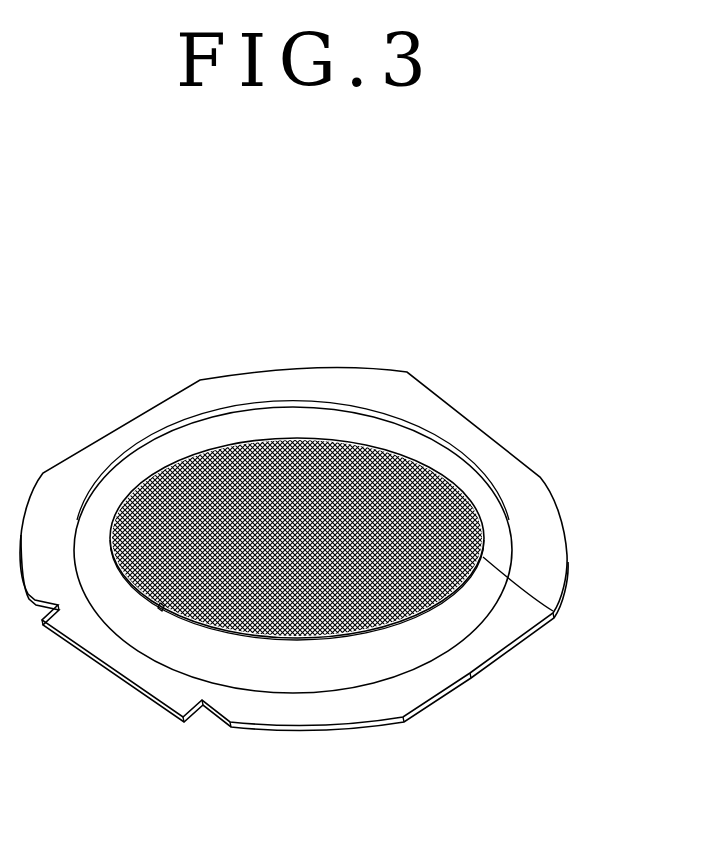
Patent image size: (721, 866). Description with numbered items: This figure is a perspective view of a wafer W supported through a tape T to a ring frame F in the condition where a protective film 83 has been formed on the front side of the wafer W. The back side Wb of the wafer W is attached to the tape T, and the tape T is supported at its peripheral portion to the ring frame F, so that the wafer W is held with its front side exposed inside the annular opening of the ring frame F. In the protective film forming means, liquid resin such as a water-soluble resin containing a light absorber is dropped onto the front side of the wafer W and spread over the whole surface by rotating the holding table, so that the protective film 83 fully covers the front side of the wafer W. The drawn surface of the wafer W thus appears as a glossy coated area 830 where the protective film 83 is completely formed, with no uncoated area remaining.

The protective film 83 is at (300, 437).
The glossy coated area 830 is at (553, 611).
The tape T is at (444, 463).
The ring frame F is at (547, 527).
The wafer W is at (336, 653).
The back side Wb is at (417, 630).